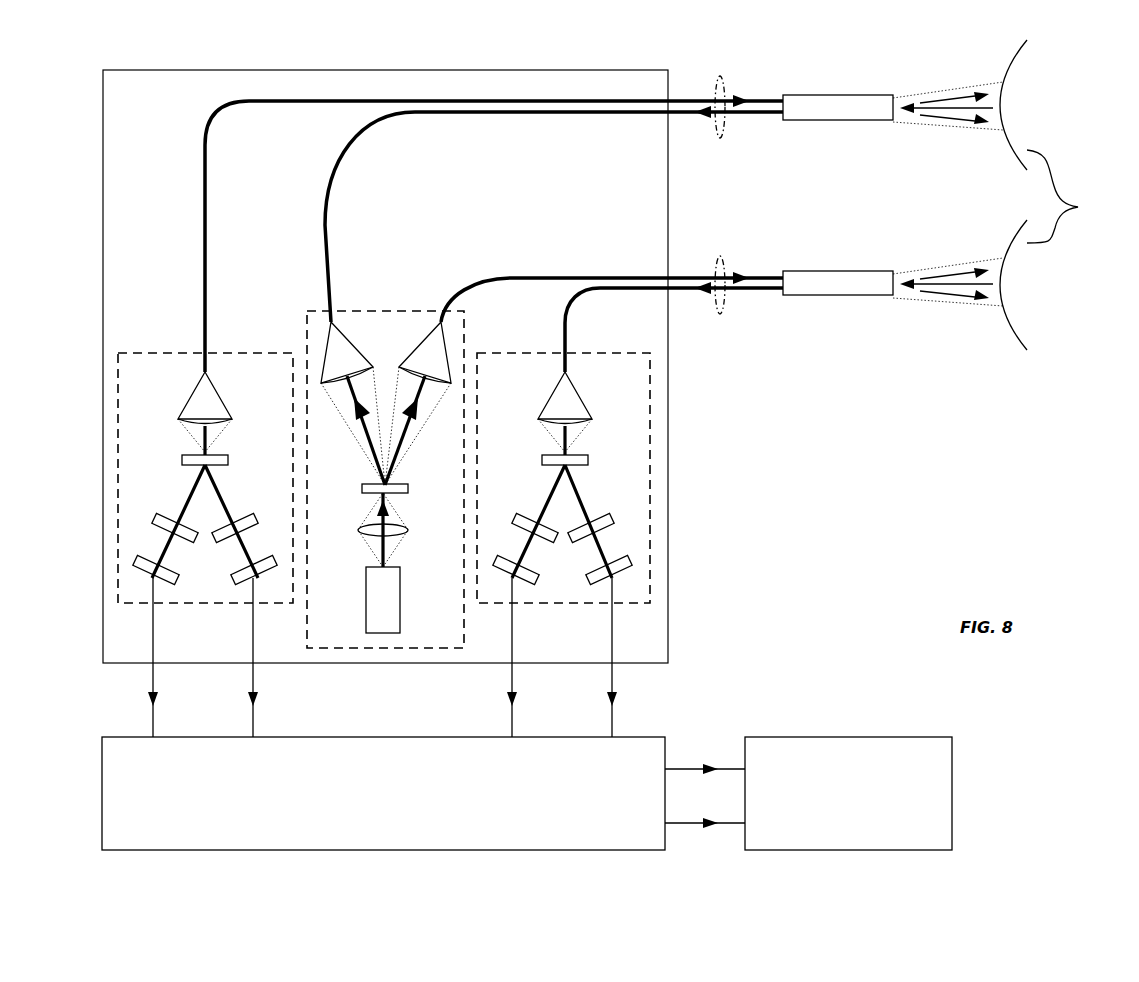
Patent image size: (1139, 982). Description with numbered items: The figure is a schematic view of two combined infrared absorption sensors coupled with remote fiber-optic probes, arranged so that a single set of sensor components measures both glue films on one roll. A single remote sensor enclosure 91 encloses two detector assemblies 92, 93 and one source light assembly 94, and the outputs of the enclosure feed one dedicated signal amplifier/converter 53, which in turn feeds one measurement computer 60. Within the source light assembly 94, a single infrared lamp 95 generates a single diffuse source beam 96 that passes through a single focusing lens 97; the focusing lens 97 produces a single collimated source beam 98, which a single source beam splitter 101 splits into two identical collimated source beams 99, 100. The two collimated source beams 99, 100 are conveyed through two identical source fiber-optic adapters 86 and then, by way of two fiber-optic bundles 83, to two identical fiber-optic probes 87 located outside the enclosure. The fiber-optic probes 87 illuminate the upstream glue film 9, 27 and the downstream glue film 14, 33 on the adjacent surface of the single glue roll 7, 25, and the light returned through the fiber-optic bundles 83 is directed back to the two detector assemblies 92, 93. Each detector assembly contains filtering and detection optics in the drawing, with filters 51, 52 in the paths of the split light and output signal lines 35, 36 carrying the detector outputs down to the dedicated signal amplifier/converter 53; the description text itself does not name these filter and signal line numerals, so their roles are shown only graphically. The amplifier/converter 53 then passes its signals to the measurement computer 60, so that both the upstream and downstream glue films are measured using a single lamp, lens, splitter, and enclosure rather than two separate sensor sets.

The glue roll 7 is at (1078, 196).
The glue roll 25 is at (1078, 196).
The upstream glue film 9 is at (964, 96).
The upstream glue film 27 is at (1014, 62).
The downstream glue film 14 is at (967, 275).
The downstream glue film 33 is at (1018, 238).
The first detector signal line 35 is at (153, 720).
The second detector signal line 36 is at (253, 720).
The first filter 51 is at (175, 584).
The second filter 52 is at (225, 584).
The dedicated signal amplifier/converter 53 is at (383, 793).
The measurement computer 60 is at (848, 793).
The fiber-optic bundle 83 is at (718, 138).
The source fiber-optic adapter 86 is at (362, 357).
The fiber-optic probe 87 is at (840, 121).
The remote sensor enclosure 91 is at (250, 70).
The detector assembly 92 is at (635, 603).
The detector assembly 93 is at (133, 603).
The source light assembly 94 is at (400, 311).
The infrared lamp 95 is at (388, 633).
The diffuse source beam 96 is at (373, 547).
The focusing lens 97 is at (410, 525).
The collimated source beam 98 is at (378, 516).
The collimated source beam 99 is at (352, 406).
The collimated source beam 100 is at (400, 418).
The source beam splitter 101 is at (410, 488).